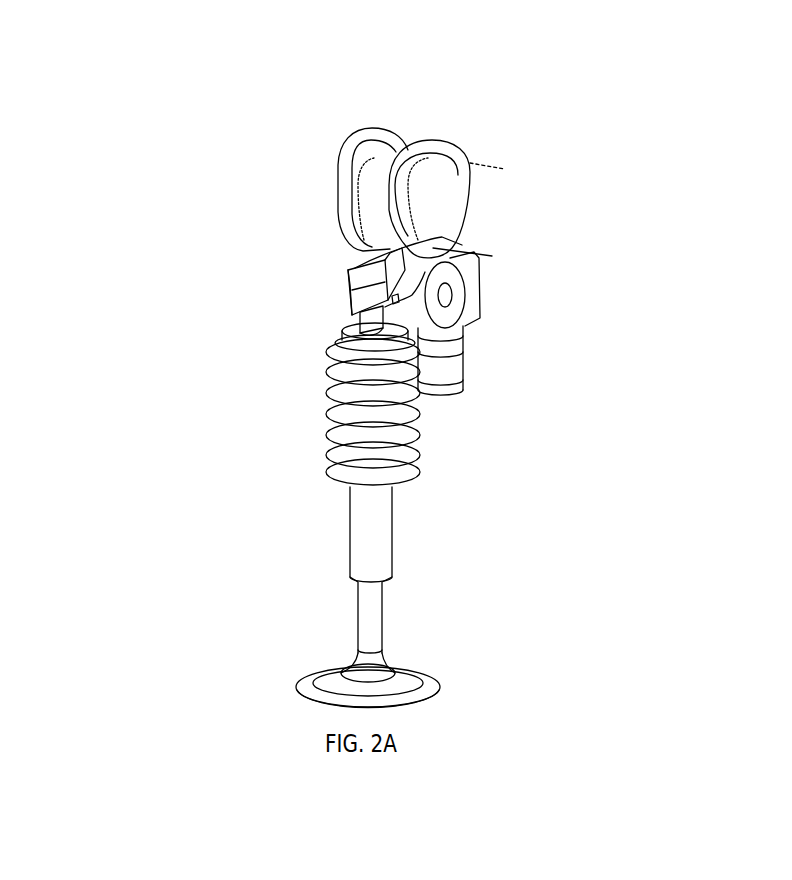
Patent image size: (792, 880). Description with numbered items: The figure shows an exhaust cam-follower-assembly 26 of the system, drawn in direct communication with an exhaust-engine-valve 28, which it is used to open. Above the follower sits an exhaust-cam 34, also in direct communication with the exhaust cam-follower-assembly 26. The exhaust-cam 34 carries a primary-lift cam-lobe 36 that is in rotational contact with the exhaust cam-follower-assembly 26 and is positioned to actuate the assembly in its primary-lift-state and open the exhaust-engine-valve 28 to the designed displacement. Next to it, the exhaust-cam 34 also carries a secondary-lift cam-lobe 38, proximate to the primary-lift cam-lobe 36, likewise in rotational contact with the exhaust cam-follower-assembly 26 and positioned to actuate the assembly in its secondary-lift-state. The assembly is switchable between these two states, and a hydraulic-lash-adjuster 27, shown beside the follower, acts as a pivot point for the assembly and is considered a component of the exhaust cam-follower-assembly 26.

The secondary-lift cam-lobe 38 is at (583, 88).
The primary-lift cam-lobe 36 is at (385, 222).
The exhaust-cam 34 is at (488, 212).
The exhaust cam-follower-assembly 26 is at (488, 300).
The hydraulic-lash-adjuster 27 is at (463, 355).
The exhaust-engine-valve 28 is at (392, 685).